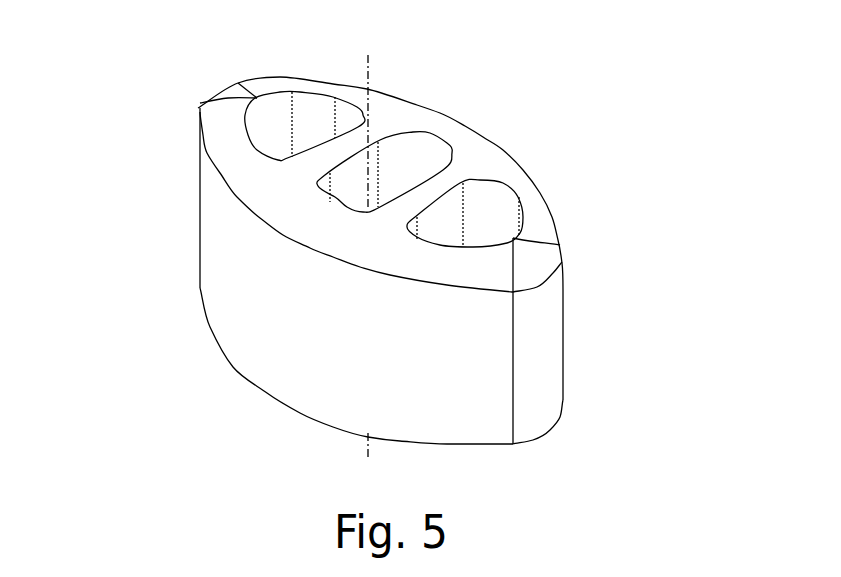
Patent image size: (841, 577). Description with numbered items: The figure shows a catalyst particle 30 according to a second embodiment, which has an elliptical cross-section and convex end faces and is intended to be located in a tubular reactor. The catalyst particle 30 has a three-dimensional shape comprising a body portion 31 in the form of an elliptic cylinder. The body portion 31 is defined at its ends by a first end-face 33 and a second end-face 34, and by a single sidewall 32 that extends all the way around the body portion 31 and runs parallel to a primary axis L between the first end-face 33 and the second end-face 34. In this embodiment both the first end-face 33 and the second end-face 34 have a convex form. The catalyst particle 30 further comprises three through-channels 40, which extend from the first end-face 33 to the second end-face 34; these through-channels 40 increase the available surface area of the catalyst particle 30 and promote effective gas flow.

The catalyst particle 30 is at (397, 259).
The body portion 31 is at (223, 285).
The sidewall 32 is at (383, 364).
The first end-face 33 is at (540, 222).
The second end-face 34 is at (522, 447).
The through-channels 40 is at (315, 120).
The primary axis L is at (372, 243).